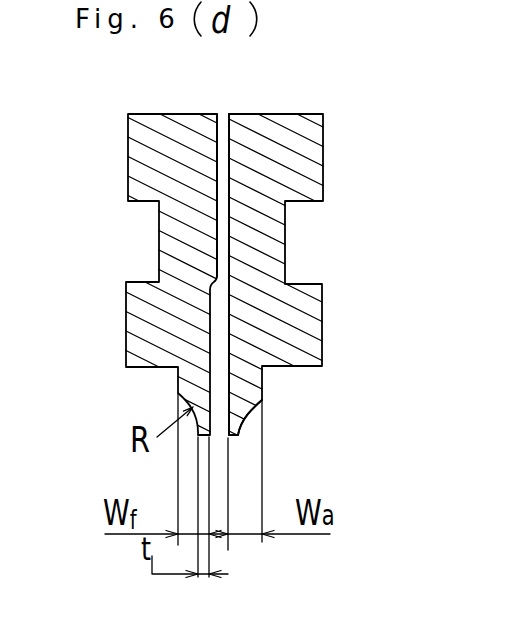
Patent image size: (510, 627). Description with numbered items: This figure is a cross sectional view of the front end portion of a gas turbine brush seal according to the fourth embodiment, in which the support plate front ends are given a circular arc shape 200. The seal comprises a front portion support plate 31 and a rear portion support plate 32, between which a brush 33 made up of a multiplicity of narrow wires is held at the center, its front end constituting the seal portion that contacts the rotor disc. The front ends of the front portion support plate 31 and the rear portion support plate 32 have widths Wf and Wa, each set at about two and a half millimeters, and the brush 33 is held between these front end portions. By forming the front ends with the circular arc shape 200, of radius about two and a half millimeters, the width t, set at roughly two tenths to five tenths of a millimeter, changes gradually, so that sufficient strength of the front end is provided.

The front portion support plate 31 is at (158, 227).
The rear portion support plate 32 is at (284, 242).
The brush 33 is at (233, 114).
The circular arc shape 200 is at (250, 410).